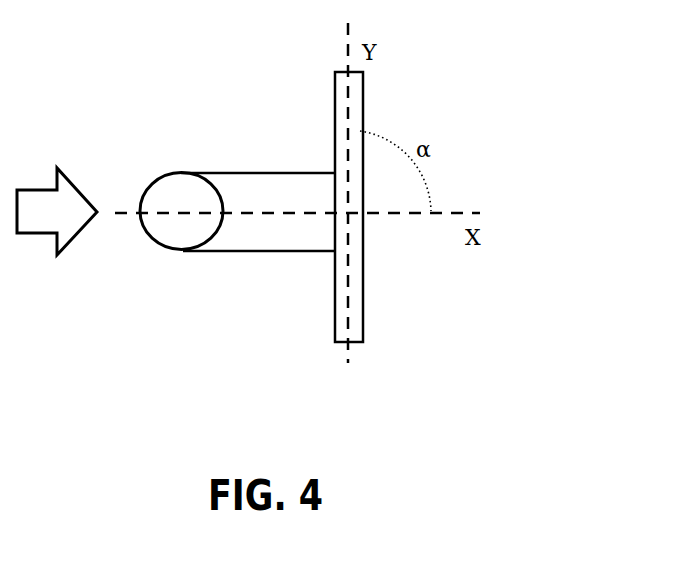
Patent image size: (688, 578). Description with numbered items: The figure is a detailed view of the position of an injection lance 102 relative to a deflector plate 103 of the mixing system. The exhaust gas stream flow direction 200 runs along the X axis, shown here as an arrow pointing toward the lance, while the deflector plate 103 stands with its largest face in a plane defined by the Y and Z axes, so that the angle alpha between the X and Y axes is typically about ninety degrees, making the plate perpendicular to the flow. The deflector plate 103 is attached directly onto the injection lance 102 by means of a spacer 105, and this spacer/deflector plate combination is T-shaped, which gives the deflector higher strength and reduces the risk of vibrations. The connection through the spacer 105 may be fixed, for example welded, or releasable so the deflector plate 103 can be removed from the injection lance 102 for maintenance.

The exhaust gas stream flow direction 200 is at (57, 211).
The injection lance 102 is at (178, 237).
The spacer 105 is at (258, 238).
The deflector plate 103 is at (353, 342).